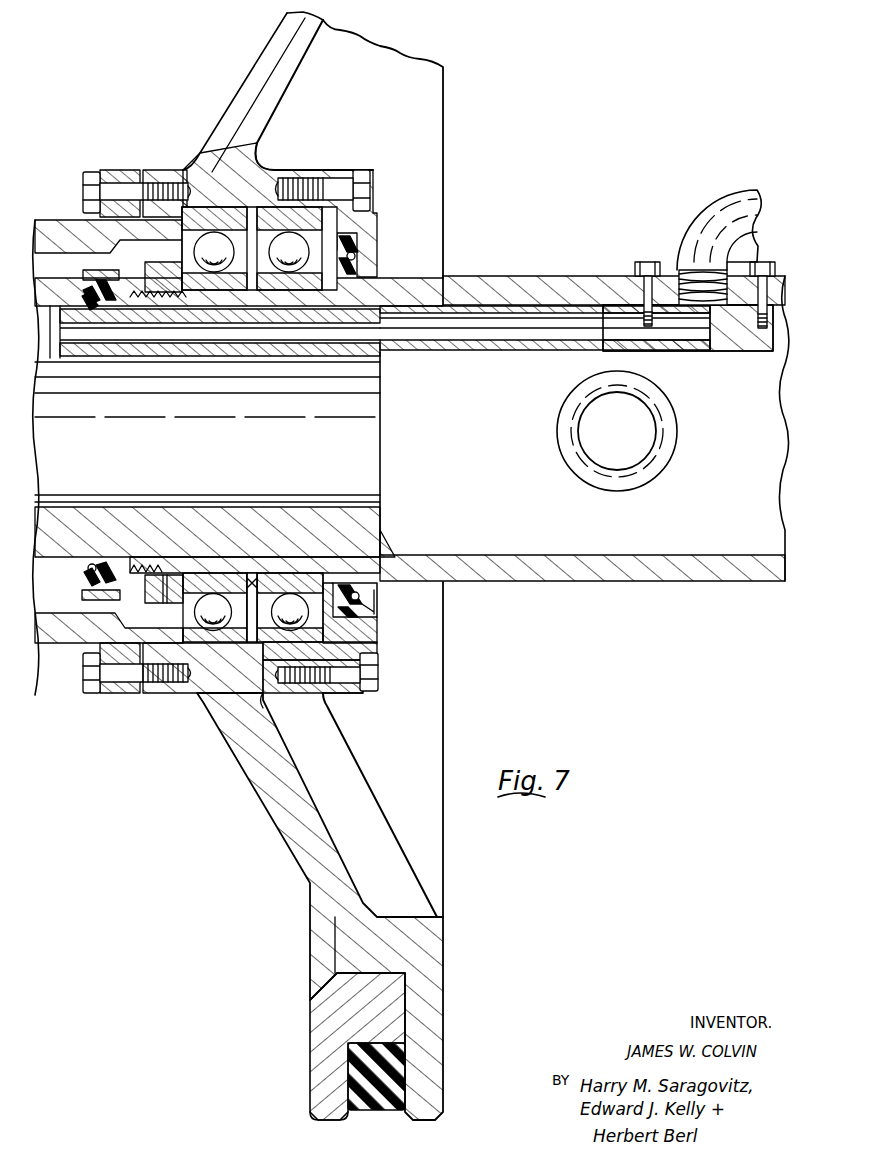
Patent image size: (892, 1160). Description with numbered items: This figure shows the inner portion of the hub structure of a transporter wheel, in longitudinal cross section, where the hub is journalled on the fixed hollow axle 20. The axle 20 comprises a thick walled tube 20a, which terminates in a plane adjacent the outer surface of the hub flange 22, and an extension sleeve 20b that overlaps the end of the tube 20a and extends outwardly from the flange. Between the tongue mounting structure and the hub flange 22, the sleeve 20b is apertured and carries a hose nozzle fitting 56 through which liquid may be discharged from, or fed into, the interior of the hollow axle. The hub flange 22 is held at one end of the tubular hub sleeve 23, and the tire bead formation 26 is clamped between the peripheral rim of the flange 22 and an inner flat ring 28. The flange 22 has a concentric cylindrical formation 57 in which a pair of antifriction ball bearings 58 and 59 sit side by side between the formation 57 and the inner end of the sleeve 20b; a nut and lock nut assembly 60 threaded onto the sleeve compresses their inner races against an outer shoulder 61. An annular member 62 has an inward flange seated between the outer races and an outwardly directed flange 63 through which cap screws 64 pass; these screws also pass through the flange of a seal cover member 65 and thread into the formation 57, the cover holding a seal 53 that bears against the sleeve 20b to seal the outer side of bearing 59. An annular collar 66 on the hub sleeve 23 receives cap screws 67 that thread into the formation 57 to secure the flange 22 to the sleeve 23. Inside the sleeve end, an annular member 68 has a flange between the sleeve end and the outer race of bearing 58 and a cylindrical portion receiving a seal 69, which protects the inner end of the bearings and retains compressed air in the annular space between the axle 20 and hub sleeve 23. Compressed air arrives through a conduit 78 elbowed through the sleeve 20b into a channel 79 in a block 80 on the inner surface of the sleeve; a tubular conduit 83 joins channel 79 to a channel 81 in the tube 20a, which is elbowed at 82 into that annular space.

The fixed tubular axle 20 is at (383, 396).
The thick walled tube 20a is at (376, 515).
The extension sleeve 20b is at (584, 557).
The hub flange 22 is at (304, 850).
The hub sleeve 23 is at (60, 197).
The bead formation 26 is at (386, 1125).
The inner flat ring 28 is at (325, 1125).
The seal 53 is at (383, 599).
The hose nozzle fitting 56 is at (601, 470).
The cylindrical formation 57 is at (205, 698).
The antifriction ball bearing 58 is at (200, 580).
The antifriction ball bearing 59 is at (262, 580).
The nut and lock nut assembly 60 is at (160, 557).
The outer shoulder 61 is at (356, 557).
The annular member 62 is at (262, 698).
The outwardly directed annular flange 63 is at (340, 698).
The cap screws 64 is at (378, 678).
The seal cover member 65 is at (380, 634).
The annular collar 66 is at (130, 697).
The cap screws 67 is at (92, 696).
The annular member 68 is at (72, 604).
The seal 69 is at (88, 290).
The conduit 78 is at (704, 222).
The channel 79 is at (667, 353).
The block 80 is at (749, 353).
The channel 81 is at (278, 360).
The elbow 82 is at (80, 306).
The tubular conduit 83 is at (513, 350).